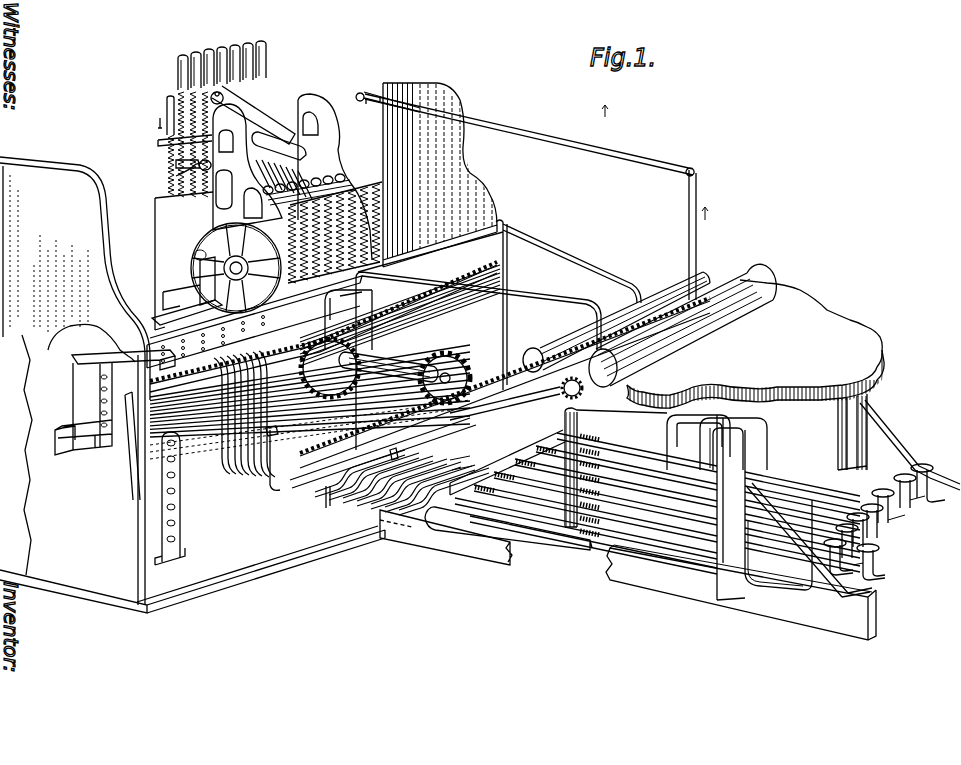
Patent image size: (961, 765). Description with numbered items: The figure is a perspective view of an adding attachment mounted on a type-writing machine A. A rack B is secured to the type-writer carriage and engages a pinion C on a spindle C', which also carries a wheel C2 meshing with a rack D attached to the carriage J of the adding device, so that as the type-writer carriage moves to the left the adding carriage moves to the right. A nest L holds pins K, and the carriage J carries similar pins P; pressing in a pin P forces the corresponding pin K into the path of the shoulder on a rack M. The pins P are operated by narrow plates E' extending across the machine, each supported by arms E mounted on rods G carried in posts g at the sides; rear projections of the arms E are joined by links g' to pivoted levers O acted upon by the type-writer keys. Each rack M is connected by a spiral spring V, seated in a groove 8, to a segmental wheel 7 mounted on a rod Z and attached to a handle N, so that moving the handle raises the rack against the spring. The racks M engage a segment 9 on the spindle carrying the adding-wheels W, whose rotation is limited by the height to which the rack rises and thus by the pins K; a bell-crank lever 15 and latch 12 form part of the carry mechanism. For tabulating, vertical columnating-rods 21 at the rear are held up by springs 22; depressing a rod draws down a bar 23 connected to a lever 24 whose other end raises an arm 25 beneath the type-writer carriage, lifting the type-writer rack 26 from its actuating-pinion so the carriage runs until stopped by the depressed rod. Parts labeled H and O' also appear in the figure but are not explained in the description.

The columnating-rods 21 is at (203, 62).
The handle N is at (258, 100).
The bar 23 is at (178, 138).
The springs 22 is at (172, 158).
The groove 8 is at (176, 176).
The rod Z is at (240, 167).
The segmental wheels 7 is at (298, 158).
The bell-crank lever 15 is at (342, 162).
The latch 12 is at (340, 182).
The adding-wheels W is at (375, 192).
The spiral spring V is at (196, 192).
The segment 9 is at (202, 238).
The rack M is at (200, 266).
The lever 24 is at (540, 140).
The arm 25 is at (697, 242).
The plates E' is at (379, 362).
The nest L is at (180, 342).
The rack D is at (262, 326).
The pins P is at (118, 350).
The pins K is at (140, 352).
The carriage J is at (72, 415).
The wheel C2 is at (330, 366).
The spindle C' is at (388, 367).
The posts g is at (325, 415).
The pinion C is at (447, 378).
The rack B is at (510, 363).
The type-writer rack 26 is at (512, 400).
The type-writing machine A is at (866, 360).
The keys H is at (925, 462).
The arms E is at (244, 445).
The rods G is at (272, 470).
The pivoted levers O is at (426, 494).
The pin O' is at (316, 523).
The links g' is at (367, 498).